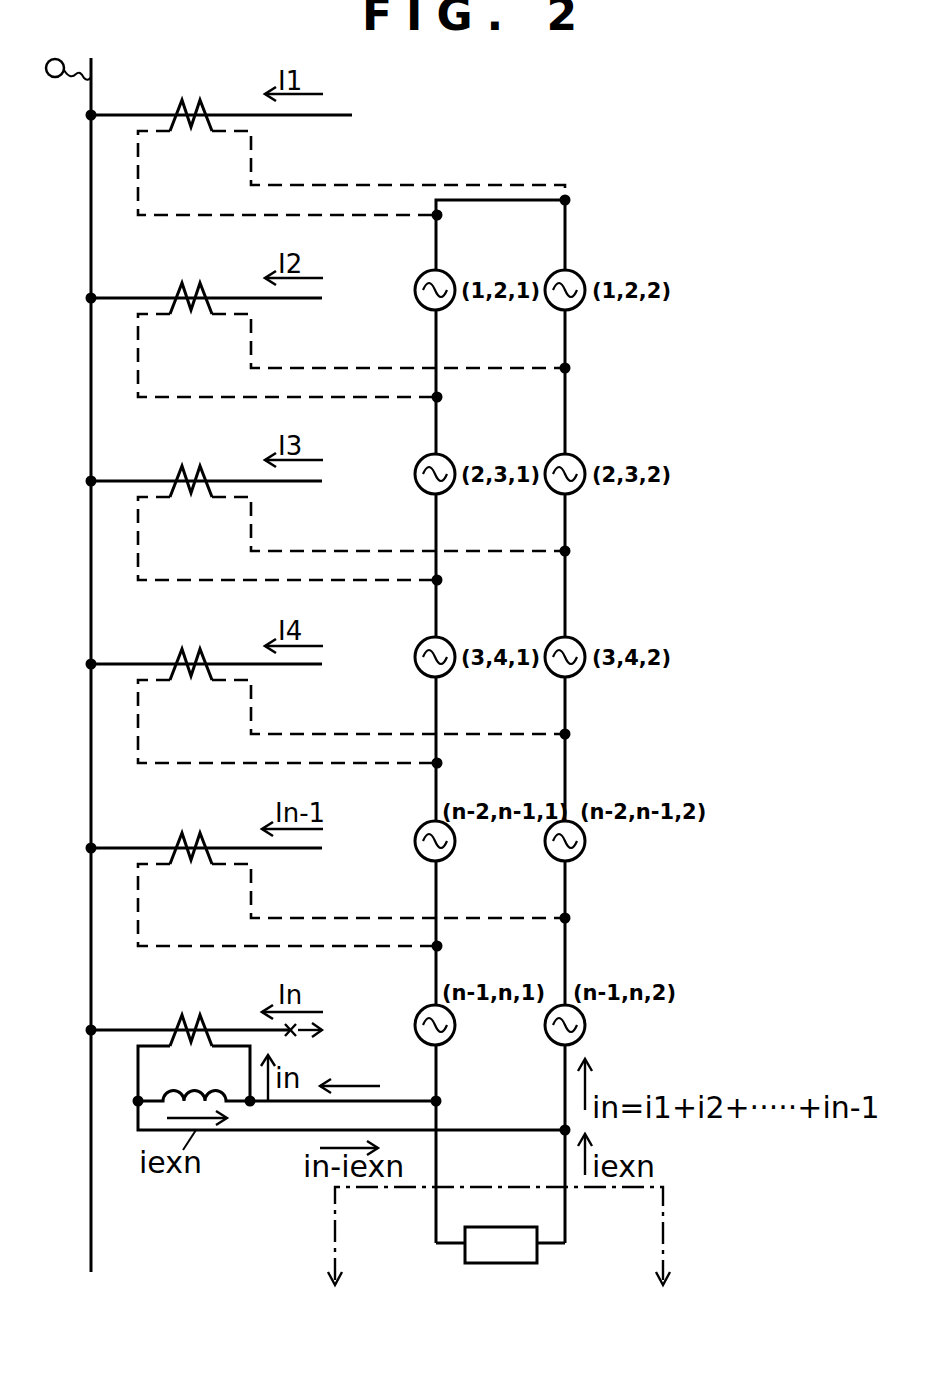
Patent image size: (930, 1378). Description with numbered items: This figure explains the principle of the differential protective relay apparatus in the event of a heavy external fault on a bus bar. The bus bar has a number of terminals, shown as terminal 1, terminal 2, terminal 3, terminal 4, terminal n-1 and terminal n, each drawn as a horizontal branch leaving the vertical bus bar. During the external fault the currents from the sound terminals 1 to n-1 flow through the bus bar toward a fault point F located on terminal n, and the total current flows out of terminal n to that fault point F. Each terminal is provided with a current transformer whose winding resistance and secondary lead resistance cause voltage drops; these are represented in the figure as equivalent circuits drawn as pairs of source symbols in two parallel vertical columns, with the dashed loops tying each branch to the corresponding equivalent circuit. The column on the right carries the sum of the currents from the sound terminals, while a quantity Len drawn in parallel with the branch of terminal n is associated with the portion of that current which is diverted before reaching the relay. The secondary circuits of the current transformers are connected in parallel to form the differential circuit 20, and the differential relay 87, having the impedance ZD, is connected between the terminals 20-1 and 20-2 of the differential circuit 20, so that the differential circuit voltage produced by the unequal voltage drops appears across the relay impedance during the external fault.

The terminal 1 is at (326, 157).
The terminal 2 is at (326, 340).
The terminal 3 is at (326, 523).
The terminal 4 is at (326, 706).
The terminal n-1 is at (326, 889).
The terminal n is at (214, 1030).
The fault point F is at (294, 1037).
The line inductance of line n Len is at (222, 1066).
The differential relay 87 is at (520, 1209).
The differential circuit 20 is at (494, 1253).
The terminal of the differential circuit 20-1 is at (453, 1245).
The terminal of the differential circuit 20-2 is at (550, 1245).